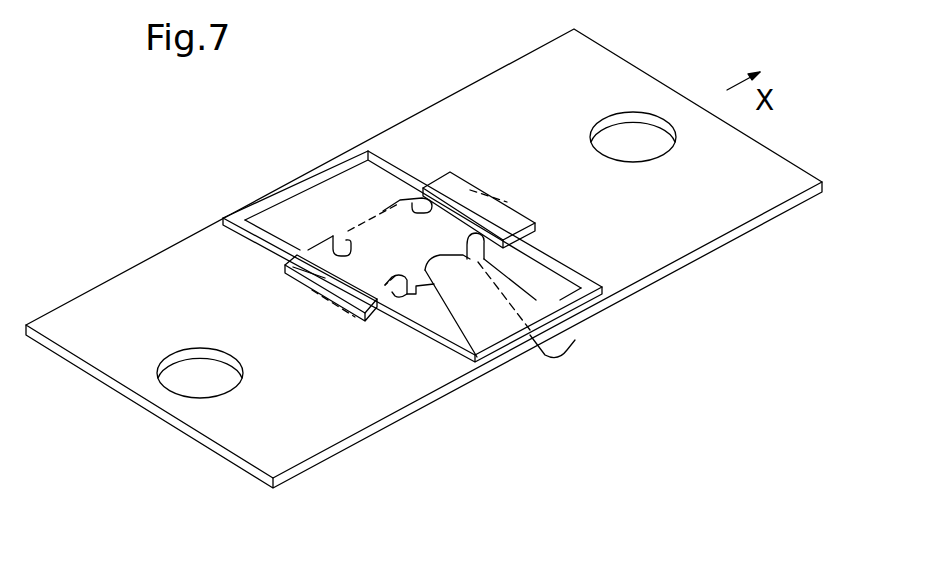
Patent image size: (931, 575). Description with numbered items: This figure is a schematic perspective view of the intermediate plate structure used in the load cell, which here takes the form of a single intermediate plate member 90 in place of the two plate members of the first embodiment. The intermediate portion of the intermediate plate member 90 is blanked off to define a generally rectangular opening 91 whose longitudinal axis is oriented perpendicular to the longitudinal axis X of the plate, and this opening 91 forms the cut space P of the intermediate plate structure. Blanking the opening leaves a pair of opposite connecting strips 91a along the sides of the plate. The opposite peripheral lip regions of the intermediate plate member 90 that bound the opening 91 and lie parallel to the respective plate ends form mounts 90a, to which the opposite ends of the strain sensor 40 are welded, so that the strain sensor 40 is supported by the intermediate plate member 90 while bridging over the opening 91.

The intermediate plate member 90 is at (122, 325).
The mounts 90a is at (308, 250).
The generally rectangular opening 91 is at (320, 213).
The connecting strips 91a is at (283, 187).
The strain sensor 40 is at (500, 193).